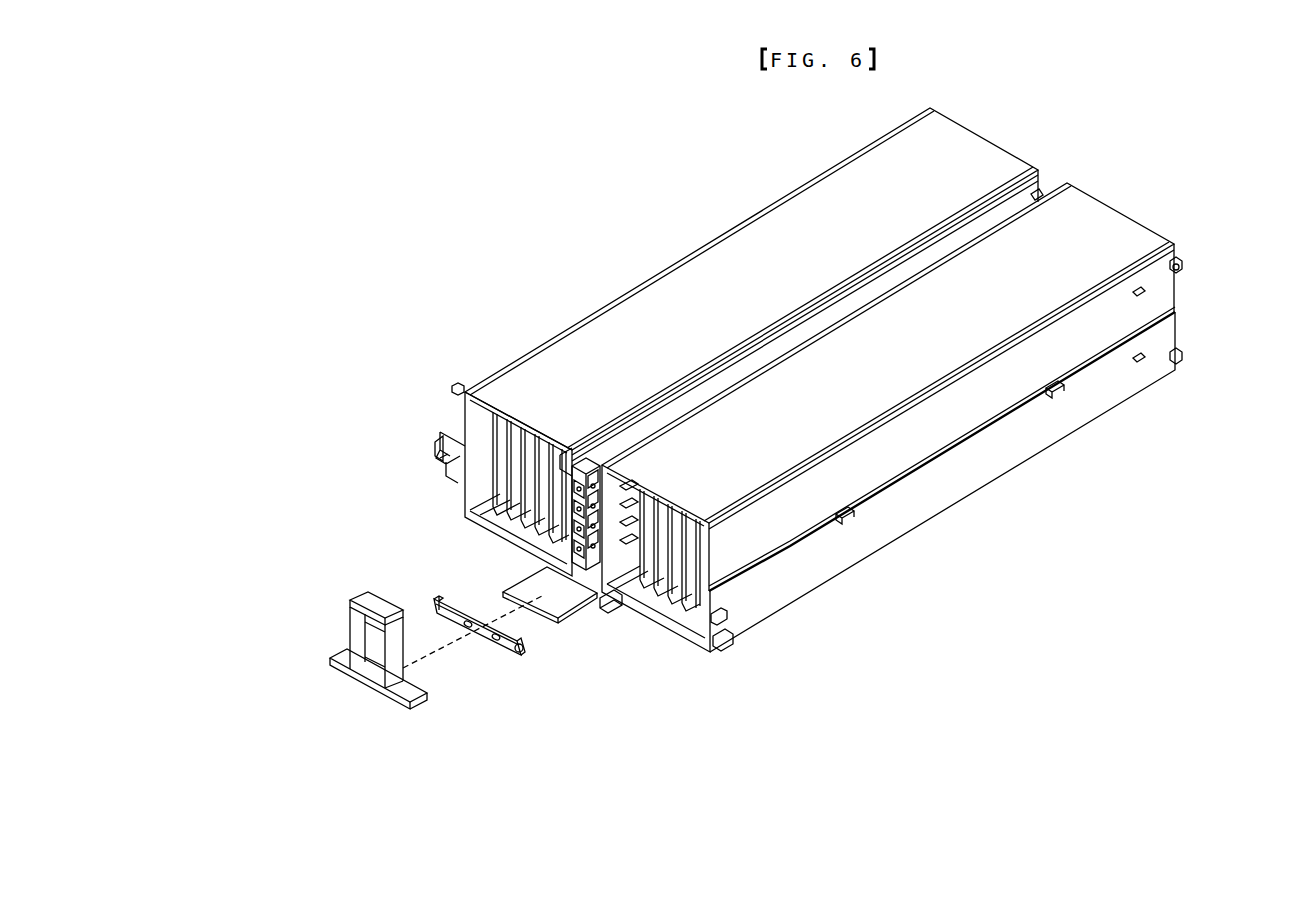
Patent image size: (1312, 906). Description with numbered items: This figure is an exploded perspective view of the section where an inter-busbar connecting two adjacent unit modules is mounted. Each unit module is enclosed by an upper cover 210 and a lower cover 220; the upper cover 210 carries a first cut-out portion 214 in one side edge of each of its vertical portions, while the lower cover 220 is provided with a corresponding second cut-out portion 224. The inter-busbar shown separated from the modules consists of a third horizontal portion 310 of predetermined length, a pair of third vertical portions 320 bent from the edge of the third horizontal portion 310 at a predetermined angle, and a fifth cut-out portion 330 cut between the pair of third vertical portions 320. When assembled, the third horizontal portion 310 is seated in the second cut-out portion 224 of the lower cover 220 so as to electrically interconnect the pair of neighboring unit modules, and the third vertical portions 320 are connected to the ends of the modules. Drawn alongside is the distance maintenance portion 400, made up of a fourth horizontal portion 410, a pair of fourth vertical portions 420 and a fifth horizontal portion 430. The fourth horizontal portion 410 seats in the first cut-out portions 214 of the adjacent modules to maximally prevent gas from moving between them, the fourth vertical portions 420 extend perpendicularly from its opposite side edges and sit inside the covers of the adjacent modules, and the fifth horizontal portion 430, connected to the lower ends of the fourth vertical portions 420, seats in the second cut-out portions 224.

The upper cover 210 is at (1180, 266).
The lower cover 220 is at (1180, 356).
The first cut-out portion 214 is at (598, 462).
The second cut-out portion 224 is at (616, 596).
The third horizontal portion 310 is at (437, 598).
The third vertical portions 320 is at (468, 631).
The fifth cut-out portion 330 is at (492, 620).
The distance maintenance portion 400 is at (256, 628).
The fourth horizontal portion 410 is at (350, 603).
The fourth vertical portions 420 is at (350, 632).
The fifth horizontal portion 430 is at (340, 662).